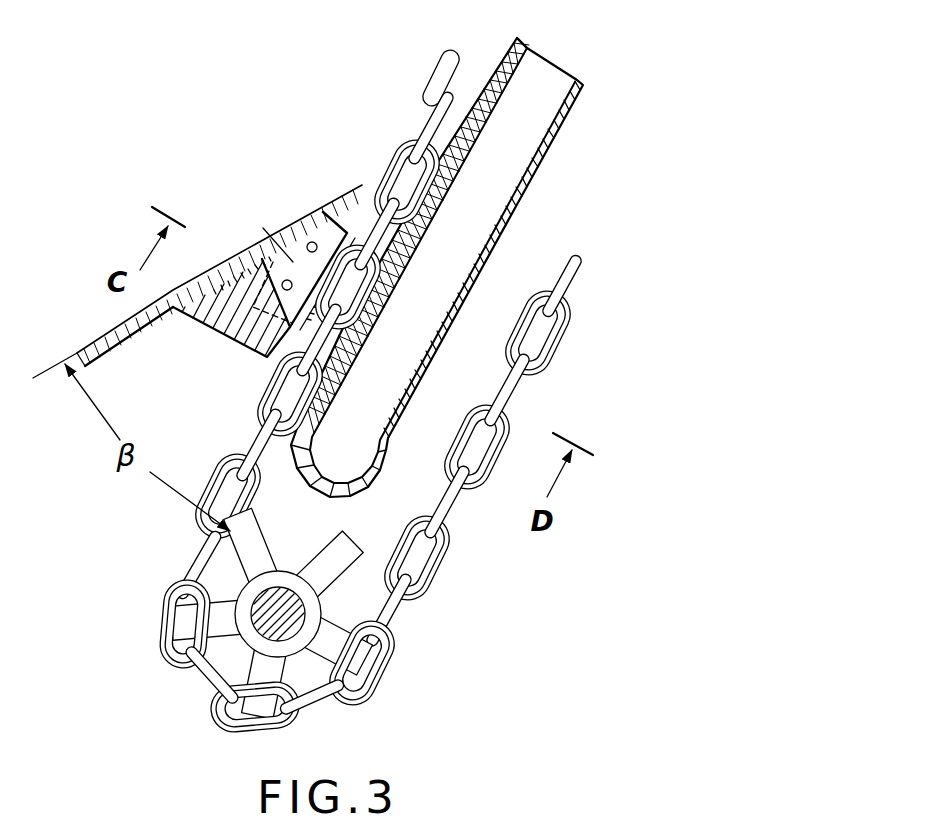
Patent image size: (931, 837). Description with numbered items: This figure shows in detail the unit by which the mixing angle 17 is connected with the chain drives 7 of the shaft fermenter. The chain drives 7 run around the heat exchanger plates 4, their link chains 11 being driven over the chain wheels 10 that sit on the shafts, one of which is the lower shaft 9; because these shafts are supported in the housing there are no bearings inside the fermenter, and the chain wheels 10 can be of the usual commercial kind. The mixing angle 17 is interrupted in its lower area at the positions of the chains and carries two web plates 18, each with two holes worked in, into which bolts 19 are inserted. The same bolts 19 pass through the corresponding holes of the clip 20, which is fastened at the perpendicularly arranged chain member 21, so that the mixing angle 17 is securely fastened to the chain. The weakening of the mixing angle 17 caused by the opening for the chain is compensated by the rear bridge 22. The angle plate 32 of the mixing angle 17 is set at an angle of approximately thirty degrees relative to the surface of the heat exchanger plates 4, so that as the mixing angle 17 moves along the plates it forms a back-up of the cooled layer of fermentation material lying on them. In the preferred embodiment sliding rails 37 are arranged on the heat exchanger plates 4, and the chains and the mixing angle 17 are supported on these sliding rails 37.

The heat exchanger plates 4 is at (556, 84).
The sliding rails 37 is at (510, 48).
The mixing angle 17 is at (197, 248).
The angle plate 32 is at (99, 332).
The rear bridge 22 is at (242, 330).
The clip 20 is at (277, 366).
The web plates 18 is at (266, 231).
The bolts 19 is at (308, 243).
The chain member 21 is at (354, 240).
The chain drives 7 is at (254, 622).
The lower shaft 9 is at (270, 633).
The chain wheels 10 is at (183, 625).
The link chains 11 is at (397, 648).